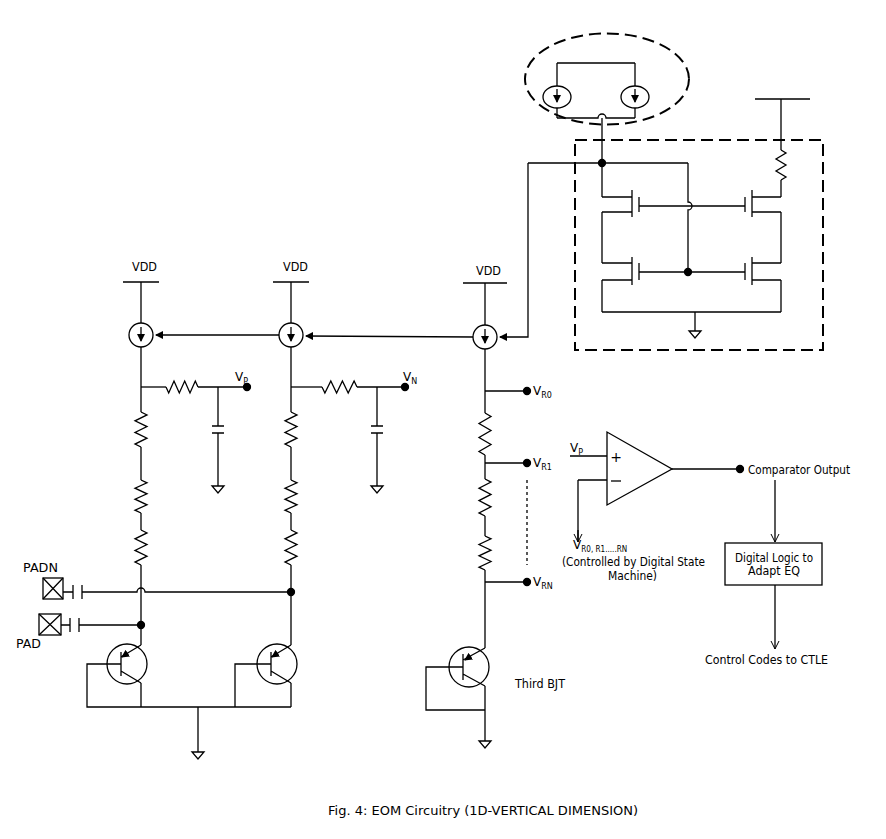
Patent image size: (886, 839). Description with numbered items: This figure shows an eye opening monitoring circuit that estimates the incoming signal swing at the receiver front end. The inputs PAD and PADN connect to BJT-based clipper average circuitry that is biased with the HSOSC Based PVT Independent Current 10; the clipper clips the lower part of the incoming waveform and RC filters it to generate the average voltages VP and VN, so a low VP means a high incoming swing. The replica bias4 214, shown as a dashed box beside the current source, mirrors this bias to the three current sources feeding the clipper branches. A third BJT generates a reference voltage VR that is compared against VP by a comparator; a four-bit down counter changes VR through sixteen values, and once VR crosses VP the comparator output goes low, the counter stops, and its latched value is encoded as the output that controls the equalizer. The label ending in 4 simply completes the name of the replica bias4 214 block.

The HSOSC Based PVT Independent Current 10 is at (662, 90).
The replica bias4 214 is at (675, 230).
The replica bias transistor network 4 is at (706, 221).